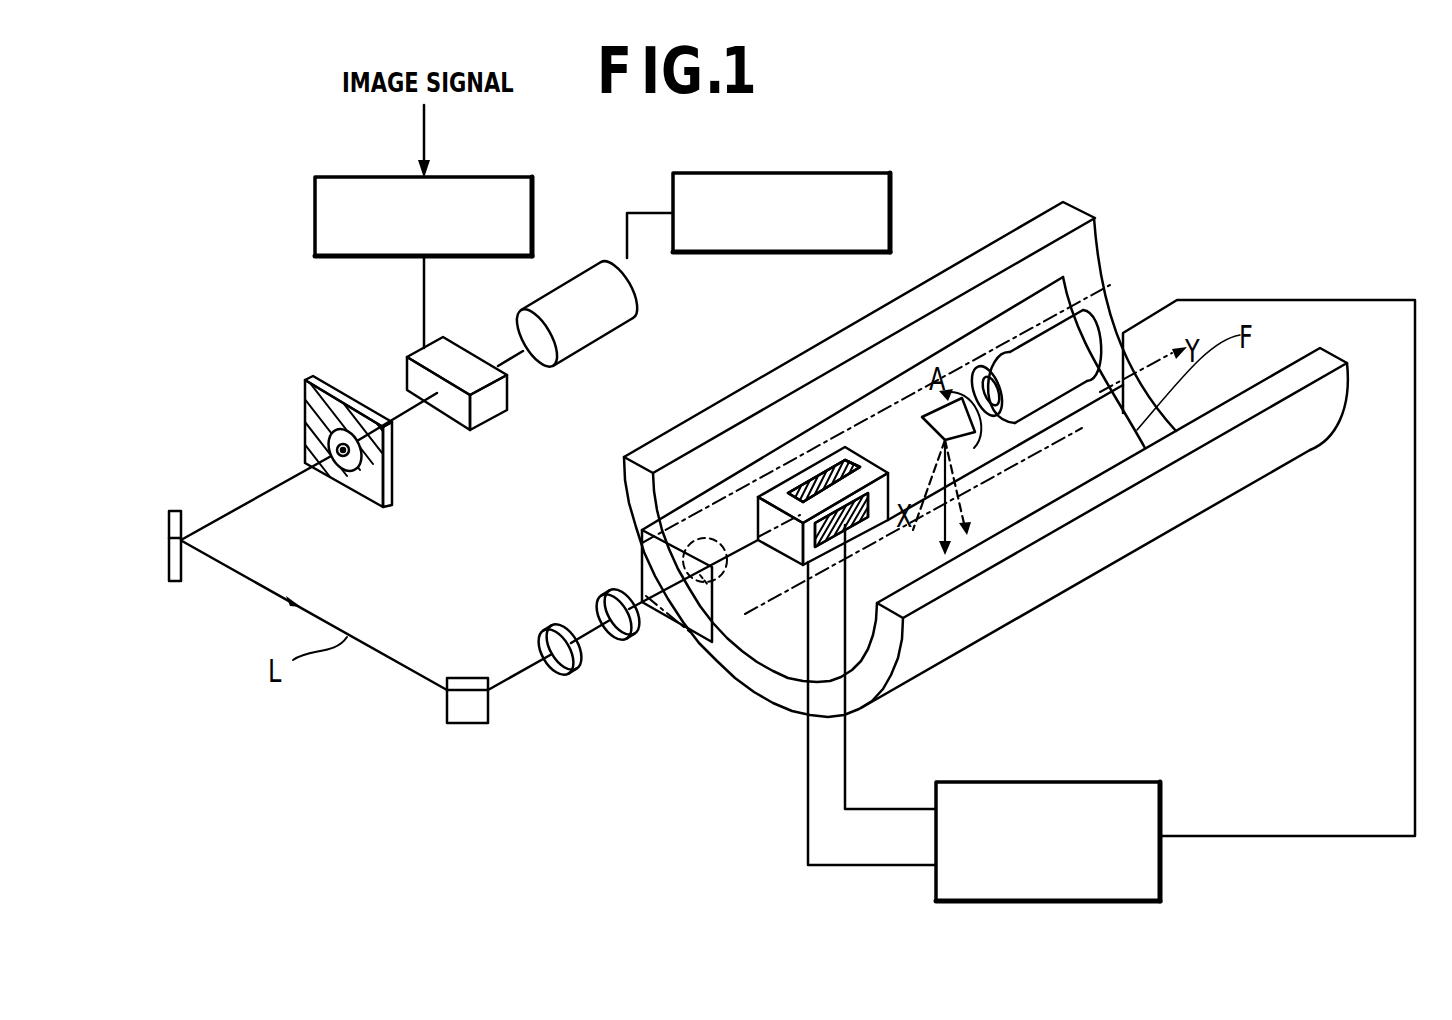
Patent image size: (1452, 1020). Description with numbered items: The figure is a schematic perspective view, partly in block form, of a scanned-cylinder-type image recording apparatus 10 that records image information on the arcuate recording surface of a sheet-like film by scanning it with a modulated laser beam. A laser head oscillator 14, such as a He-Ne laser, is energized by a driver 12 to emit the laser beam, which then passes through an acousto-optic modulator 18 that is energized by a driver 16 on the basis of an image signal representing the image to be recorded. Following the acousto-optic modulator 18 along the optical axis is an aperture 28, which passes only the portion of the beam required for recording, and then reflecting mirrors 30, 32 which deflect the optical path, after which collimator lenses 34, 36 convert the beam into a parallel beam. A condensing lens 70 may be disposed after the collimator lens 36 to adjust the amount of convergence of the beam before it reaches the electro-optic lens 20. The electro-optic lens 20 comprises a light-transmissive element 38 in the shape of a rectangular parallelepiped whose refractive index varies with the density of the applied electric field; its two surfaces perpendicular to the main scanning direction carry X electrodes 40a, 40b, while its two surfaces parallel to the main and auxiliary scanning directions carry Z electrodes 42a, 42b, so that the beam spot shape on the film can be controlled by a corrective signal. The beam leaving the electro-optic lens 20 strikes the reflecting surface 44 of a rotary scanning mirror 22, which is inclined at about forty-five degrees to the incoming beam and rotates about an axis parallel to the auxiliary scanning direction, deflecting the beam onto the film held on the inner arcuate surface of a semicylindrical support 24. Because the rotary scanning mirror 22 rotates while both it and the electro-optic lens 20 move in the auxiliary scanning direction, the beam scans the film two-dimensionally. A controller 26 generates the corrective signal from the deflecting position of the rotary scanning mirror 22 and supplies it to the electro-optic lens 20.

The scanned-cylinder-type image recording apparatus 10 is at (1149, 181).
The driver 12 is at (815, 173).
The laser head oscillator 14 is at (583, 287).
The driver 16 is at (480, 177).
The acousto-optic modulator 18 is at (508, 408).
The electro-optic lens 20 is at (818, 444).
The rotary scanning mirror 22 is at (1025, 325).
The semicylindrical support 24 is at (1267, 467).
The controller 26 is at (1133, 782).
The aperture 28 is at (397, 487).
The reflecting mirror 30 is at (173, 583).
The reflecting mirror 32 is at (463, 705).
The collimator lens 34 is at (557, 670).
The collimator lens 36 is at (623, 643).
The light-transmissive element 38 is at (740, 516).
The X electrode 40a is at (848, 520).
The X electrode 40b is at (841, 520).
The Z electrode 42a is at (808, 476).
The Z electrode 42b is at (824, 481).
The reflecting surface 44 is at (920, 425).
The condensing lens 70 is at (703, 598).